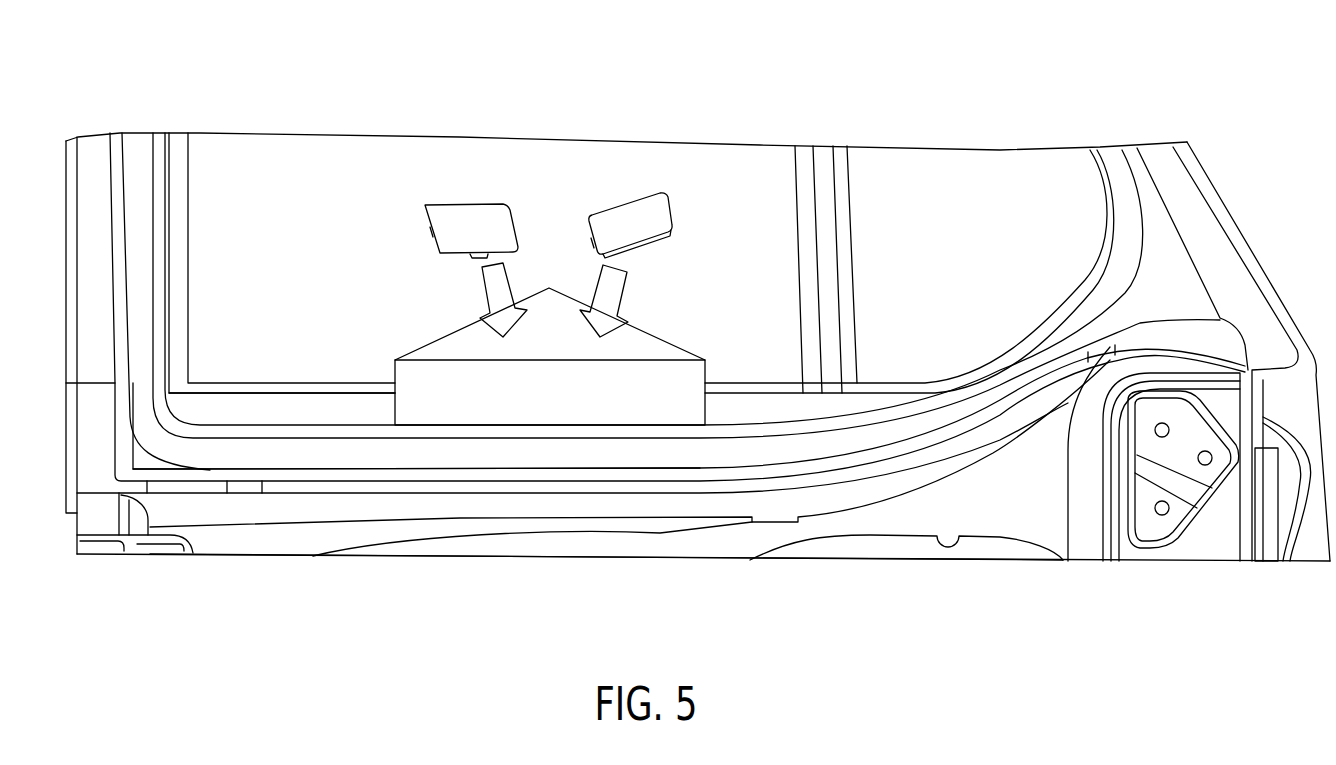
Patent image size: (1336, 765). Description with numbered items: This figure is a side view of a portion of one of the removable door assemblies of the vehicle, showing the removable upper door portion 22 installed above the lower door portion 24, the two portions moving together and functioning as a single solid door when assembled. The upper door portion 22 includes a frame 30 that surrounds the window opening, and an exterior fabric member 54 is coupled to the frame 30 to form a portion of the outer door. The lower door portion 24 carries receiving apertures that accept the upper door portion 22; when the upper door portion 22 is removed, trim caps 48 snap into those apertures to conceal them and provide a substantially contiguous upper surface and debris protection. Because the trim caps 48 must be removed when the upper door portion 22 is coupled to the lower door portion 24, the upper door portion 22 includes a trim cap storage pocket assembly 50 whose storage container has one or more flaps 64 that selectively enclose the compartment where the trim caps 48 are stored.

The upper door portion 22 is at (1153, 105).
The lower door portion 24 is at (1012, 565).
The frame 30 is at (300, 455).
The trim caps 48 is at (467, 222).
The trim cap storage pocket assembly 50 is at (564, 322).
The exterior fabric member 54 is at (243, 393).
The flaps 64 is at (553, 302).